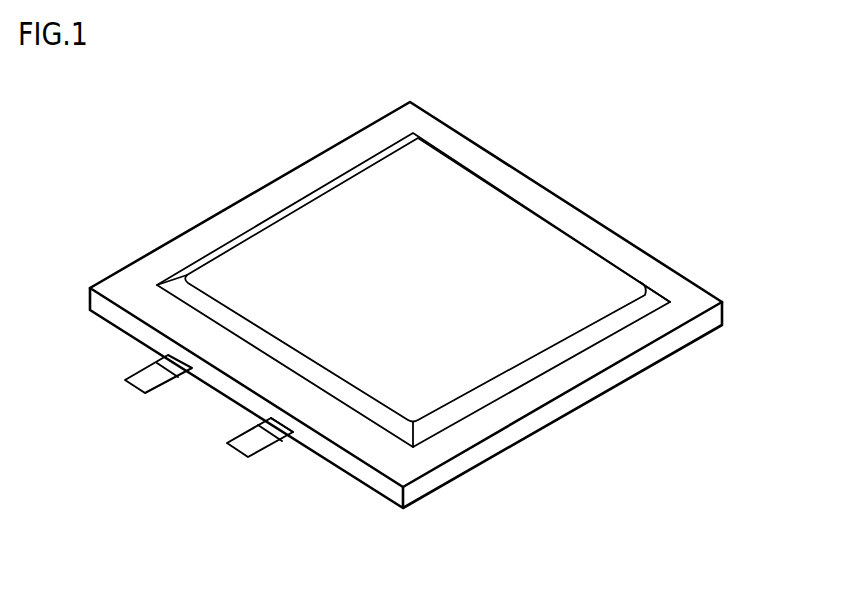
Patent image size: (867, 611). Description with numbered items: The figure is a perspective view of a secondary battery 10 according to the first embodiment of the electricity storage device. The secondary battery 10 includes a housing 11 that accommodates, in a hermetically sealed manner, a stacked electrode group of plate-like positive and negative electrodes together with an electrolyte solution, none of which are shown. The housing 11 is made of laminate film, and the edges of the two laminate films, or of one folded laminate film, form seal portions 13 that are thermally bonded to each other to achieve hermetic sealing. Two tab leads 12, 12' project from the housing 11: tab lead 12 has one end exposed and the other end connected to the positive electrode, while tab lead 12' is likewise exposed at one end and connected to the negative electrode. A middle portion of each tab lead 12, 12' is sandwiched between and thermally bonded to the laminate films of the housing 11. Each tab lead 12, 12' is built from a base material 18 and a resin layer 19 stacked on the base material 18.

The secondary battery 10 is at (550, 154).
The housing 11 is at (600, 283).
The tab lead 12 is at (252, 479).
The tab lead 12' is at (154, 414).
The seal portion 13 is at (375, 452).
The base material 18 is at (237, 435).
The resin layer 19 is at (281, 433).